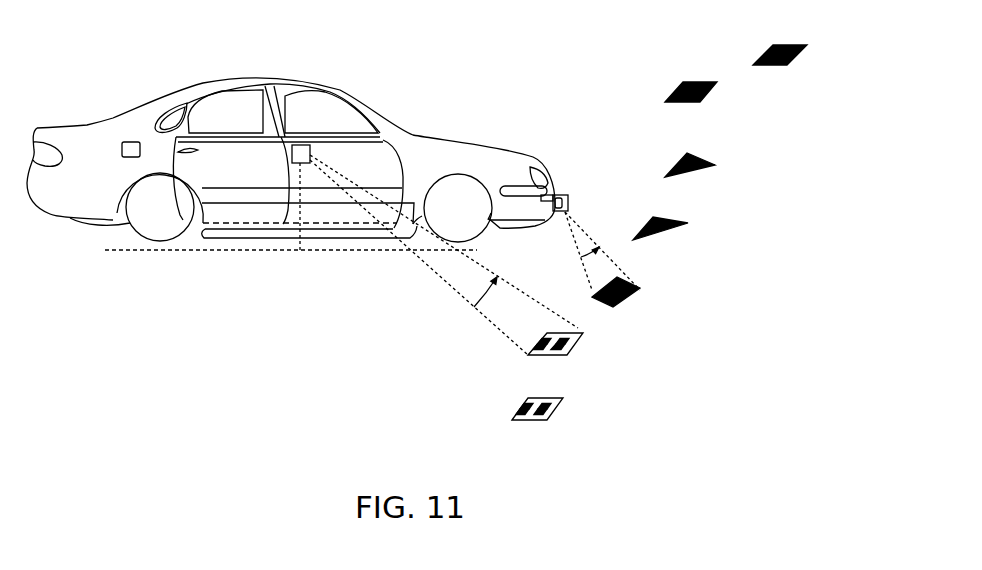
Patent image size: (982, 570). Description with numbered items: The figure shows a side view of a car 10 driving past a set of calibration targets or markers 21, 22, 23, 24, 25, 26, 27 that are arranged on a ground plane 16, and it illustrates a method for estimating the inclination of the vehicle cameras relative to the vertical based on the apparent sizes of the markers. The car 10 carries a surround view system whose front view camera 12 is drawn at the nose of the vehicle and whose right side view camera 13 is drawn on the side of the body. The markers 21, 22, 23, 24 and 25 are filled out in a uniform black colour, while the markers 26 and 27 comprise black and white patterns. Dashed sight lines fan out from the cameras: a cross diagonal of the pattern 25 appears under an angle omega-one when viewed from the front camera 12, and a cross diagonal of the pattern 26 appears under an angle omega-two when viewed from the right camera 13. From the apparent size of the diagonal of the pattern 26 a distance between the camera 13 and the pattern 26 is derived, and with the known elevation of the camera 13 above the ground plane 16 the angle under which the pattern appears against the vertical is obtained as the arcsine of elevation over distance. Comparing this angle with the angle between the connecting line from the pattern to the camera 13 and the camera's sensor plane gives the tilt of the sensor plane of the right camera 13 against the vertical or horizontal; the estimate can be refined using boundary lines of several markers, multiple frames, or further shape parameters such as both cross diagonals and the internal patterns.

The car 10 is at (452, 142).
The front view camera 12 is at (563, 195).
The right side view camera 13 is at (303, 145).
The ground plane 16 is at (207, 324).
The marker 21 is at (805, 60).
The marker 22 is at (716, 96).
The marker 23 is at (703, 170).
The marker 24 is at (677, 232).
The marker 25 is at (631, 304).
The marker 26 is at (577, 343).
The marker 27 is at (559, 408).